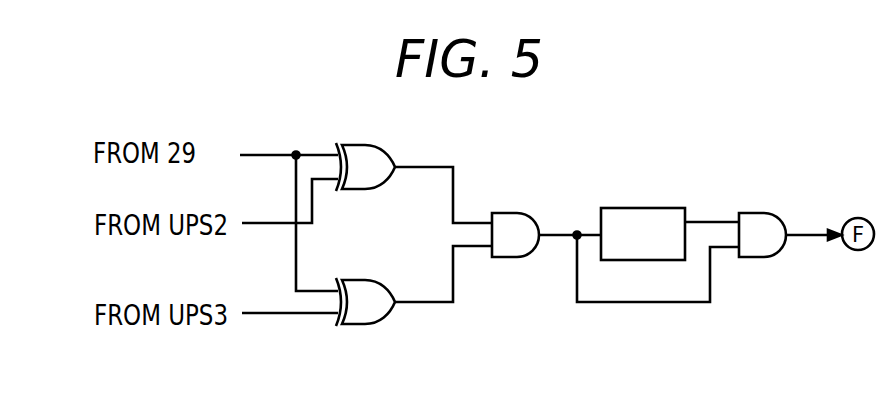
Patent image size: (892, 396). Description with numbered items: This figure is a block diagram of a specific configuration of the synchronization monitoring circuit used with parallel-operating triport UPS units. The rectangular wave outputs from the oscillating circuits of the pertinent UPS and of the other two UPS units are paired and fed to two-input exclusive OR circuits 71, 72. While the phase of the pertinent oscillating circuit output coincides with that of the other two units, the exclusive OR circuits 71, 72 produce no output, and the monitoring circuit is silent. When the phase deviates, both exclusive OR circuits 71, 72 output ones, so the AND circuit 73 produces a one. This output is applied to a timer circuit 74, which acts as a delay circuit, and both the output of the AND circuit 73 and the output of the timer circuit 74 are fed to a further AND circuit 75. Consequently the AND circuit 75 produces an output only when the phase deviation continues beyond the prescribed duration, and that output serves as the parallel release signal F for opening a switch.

The exclusive OR circuit 71 is at (375, 145).
The exclusive OR circuit 72 is at (375, 324).
The AND circuit 73 is at (518, 213).
The timer circuit 74 is at (657, 208).
The AND circuit 75 is at (772, 213).